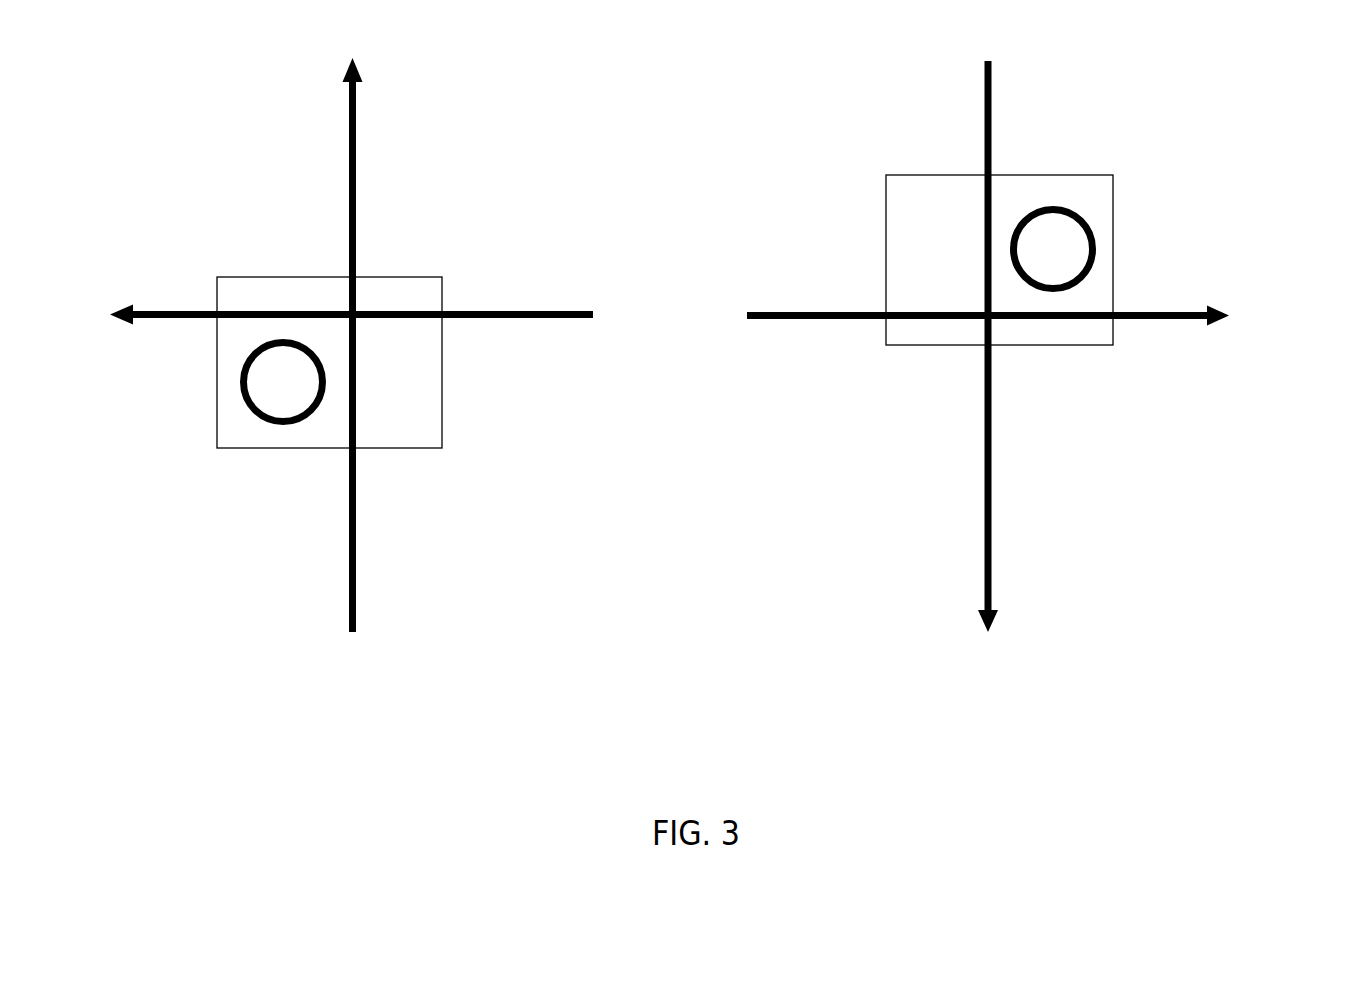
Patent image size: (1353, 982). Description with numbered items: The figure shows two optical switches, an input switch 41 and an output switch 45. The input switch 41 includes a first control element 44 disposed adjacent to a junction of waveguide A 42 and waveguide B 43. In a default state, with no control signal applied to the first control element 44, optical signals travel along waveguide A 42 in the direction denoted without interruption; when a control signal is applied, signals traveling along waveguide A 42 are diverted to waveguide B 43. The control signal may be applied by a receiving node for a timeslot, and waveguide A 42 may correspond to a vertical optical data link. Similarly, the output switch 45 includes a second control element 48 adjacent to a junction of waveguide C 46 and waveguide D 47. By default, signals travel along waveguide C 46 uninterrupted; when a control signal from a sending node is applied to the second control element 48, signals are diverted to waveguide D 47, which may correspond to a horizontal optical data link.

The input switch 41 is at (243, 273).
The waveguide A 42 is at (358, 232).
The waveguide B 43 is at (480, 305).
The control element 1 44 is at (262, 420).
The output switch 45 is at (917, 172).
The waveguide C 46 is at (1000, 537).
The waveguide D 47 is at (1168, 312).
The control element 2 48 is at (1057, 208).